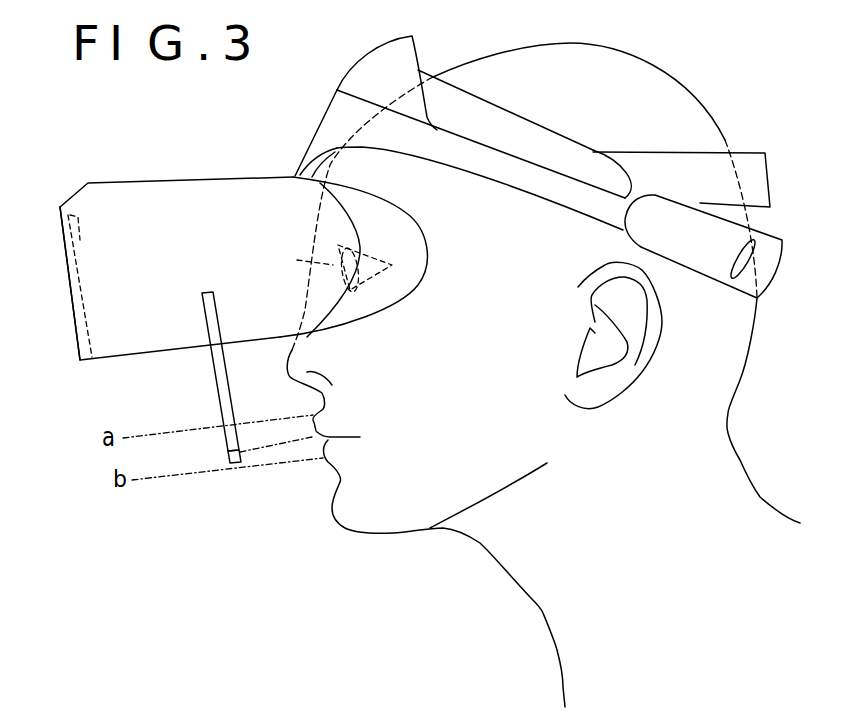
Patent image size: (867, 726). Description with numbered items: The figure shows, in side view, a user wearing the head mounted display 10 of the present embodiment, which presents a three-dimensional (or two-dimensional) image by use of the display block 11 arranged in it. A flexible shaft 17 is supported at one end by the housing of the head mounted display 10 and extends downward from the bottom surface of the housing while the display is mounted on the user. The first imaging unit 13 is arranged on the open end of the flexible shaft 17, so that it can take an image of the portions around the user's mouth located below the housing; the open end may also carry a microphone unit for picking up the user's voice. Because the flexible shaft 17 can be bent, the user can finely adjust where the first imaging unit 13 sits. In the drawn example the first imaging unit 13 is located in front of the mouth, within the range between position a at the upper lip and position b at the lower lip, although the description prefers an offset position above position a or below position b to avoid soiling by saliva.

The head mounted display 10 is at (134, 192).
The display block 11 is at (62, 283).
The first imaging unit 13 is at (232, 464).
The flexible shaft 17 is at (218, 402).